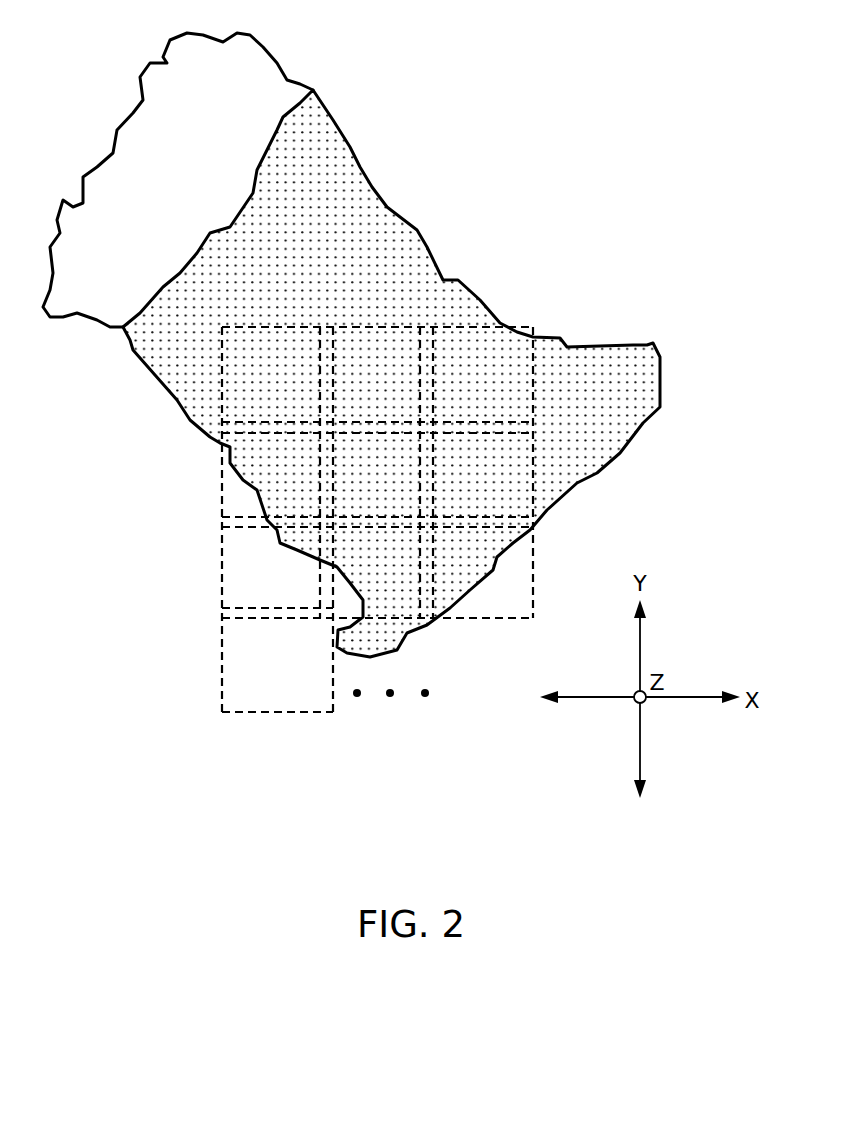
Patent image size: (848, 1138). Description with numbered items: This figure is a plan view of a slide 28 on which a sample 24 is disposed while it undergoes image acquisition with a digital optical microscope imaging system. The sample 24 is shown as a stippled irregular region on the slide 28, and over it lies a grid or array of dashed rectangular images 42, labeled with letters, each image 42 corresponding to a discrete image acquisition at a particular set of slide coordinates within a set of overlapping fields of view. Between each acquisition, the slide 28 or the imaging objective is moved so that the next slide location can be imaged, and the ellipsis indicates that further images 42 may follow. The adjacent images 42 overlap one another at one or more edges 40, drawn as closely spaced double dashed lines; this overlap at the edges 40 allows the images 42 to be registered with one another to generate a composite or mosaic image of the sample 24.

The sample 24 is at (357, 166).
The slide 28 is at (573, 118).
The edges 40 is at (428, 327).
The images 42 is at (513, 500).